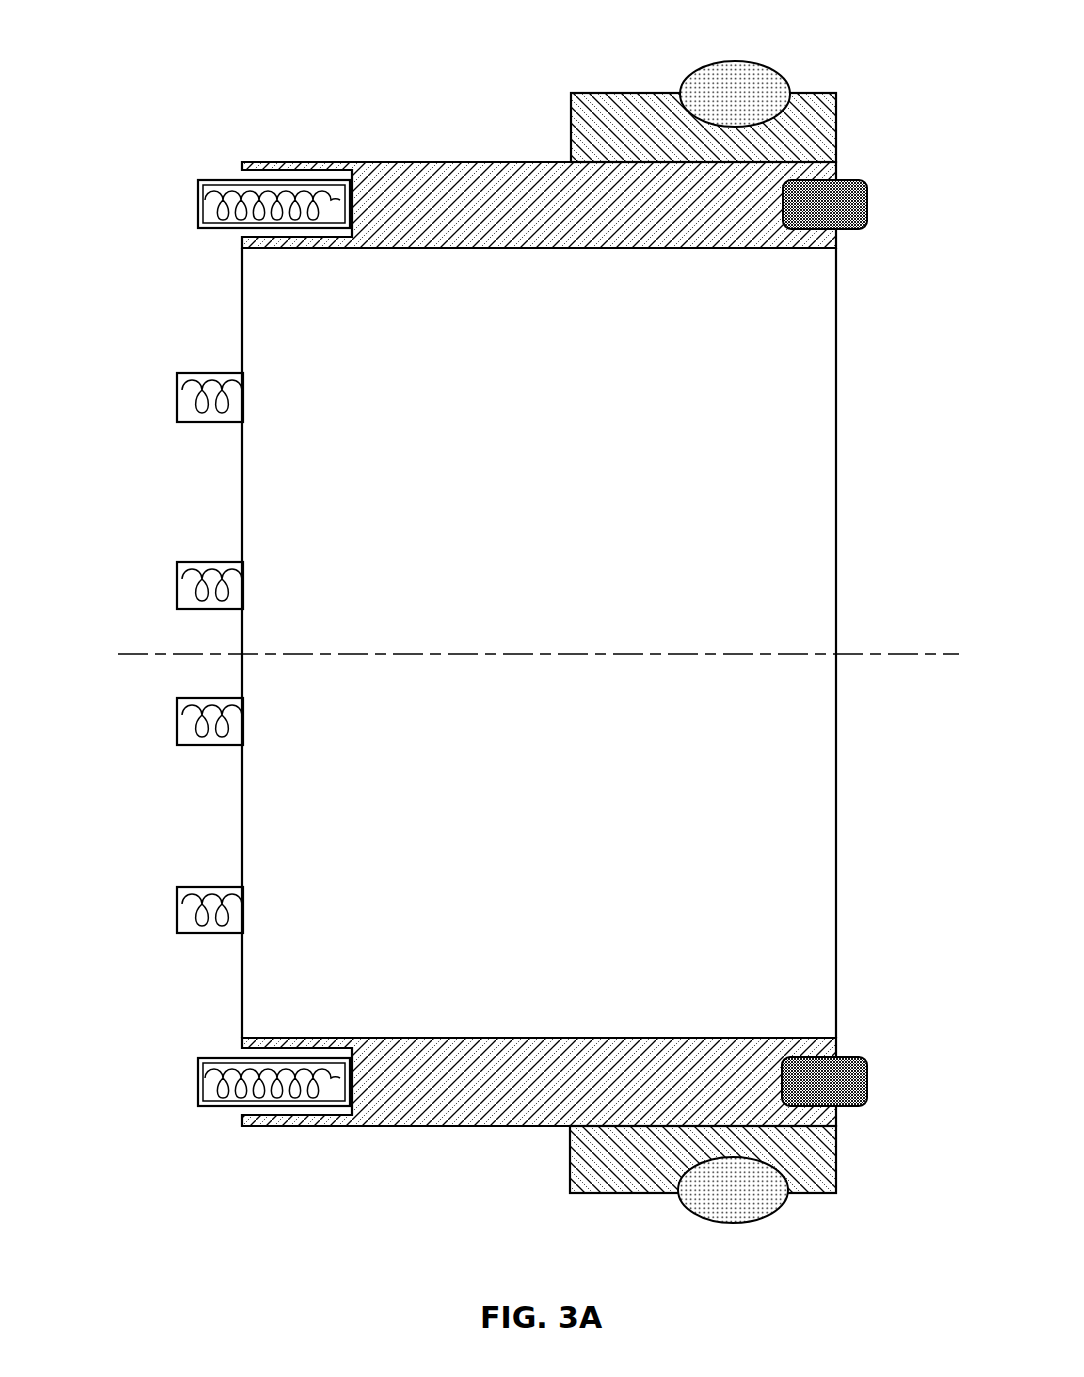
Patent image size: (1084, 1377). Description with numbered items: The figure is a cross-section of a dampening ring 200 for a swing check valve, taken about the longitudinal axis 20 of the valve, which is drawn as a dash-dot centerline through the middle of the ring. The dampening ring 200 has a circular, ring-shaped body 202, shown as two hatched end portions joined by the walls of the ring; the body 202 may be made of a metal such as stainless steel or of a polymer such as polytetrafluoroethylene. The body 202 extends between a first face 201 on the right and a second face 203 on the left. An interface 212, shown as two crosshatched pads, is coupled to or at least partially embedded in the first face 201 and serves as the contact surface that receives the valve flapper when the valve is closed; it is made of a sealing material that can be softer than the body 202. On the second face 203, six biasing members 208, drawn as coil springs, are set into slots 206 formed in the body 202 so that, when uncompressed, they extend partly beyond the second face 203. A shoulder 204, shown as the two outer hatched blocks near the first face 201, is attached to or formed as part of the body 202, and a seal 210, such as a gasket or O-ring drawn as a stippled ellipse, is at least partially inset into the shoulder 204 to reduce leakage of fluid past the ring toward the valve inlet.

The dampening ring 200 is at (145, 55).
The first face 201 is at (836, 483).
The body 202 is at (502, 1138).
The second face 203 is at (242, 497).
The shoulder 204 is at (836, 1160).
The slot 206 is at (367, 195).
The biasing member 208 is at (198, 205).
The seal 210 is at (733, 72).
The interface 212 is at (868, 205).
The longitudinal axis 20 is at (886, 655).